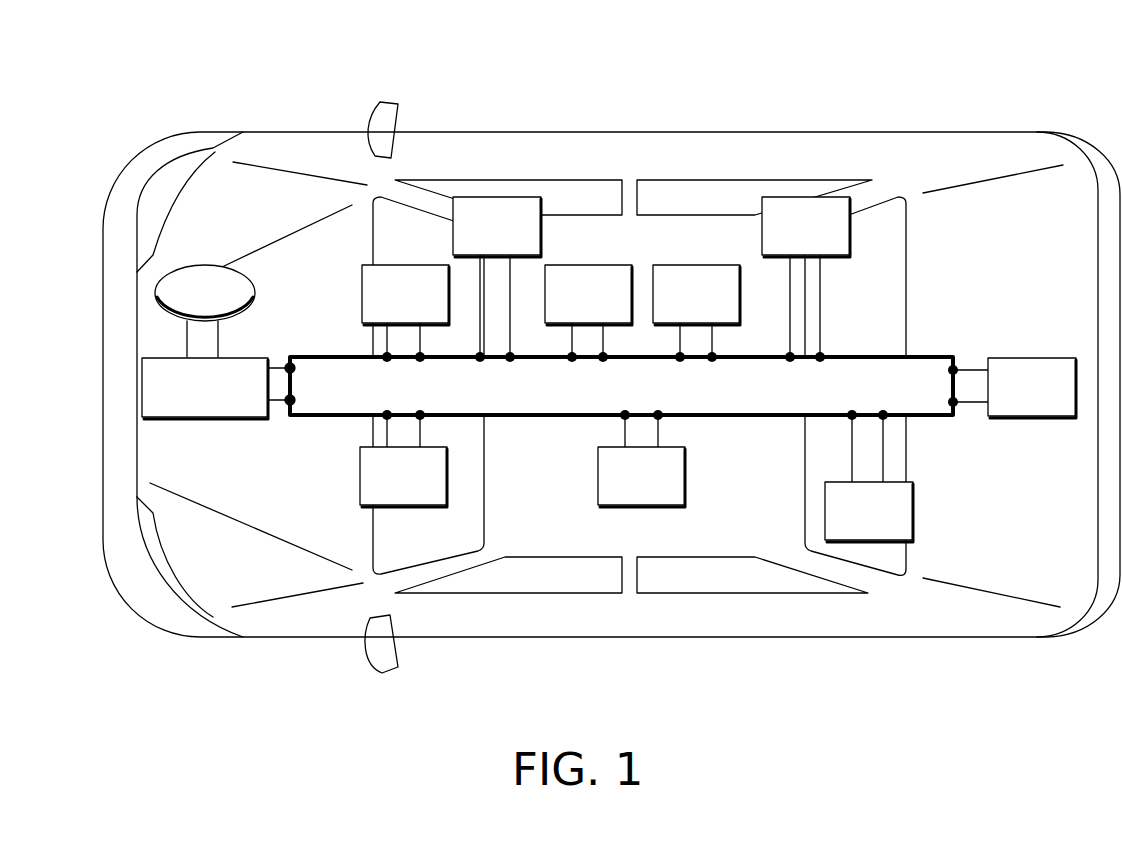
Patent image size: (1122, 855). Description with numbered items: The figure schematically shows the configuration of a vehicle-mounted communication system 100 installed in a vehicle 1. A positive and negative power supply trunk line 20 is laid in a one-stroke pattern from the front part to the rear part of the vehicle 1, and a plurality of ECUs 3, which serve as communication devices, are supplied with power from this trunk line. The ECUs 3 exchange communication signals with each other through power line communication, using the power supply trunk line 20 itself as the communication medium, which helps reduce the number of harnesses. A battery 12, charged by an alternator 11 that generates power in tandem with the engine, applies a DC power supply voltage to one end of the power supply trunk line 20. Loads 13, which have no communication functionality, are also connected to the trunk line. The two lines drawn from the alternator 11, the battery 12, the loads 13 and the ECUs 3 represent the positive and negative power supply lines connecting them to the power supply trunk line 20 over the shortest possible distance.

The vehicle 1 is at (272, 131).
The ECU 3 is at (398, 265).
The alternator 11 is at (197, 264).
The battery 12 is at (228, 419).
The load 13 is at (505, 196).
The power supply trunk line 20 is at (873, 356).
The vehicle power supply system 100 is at (993, 56).